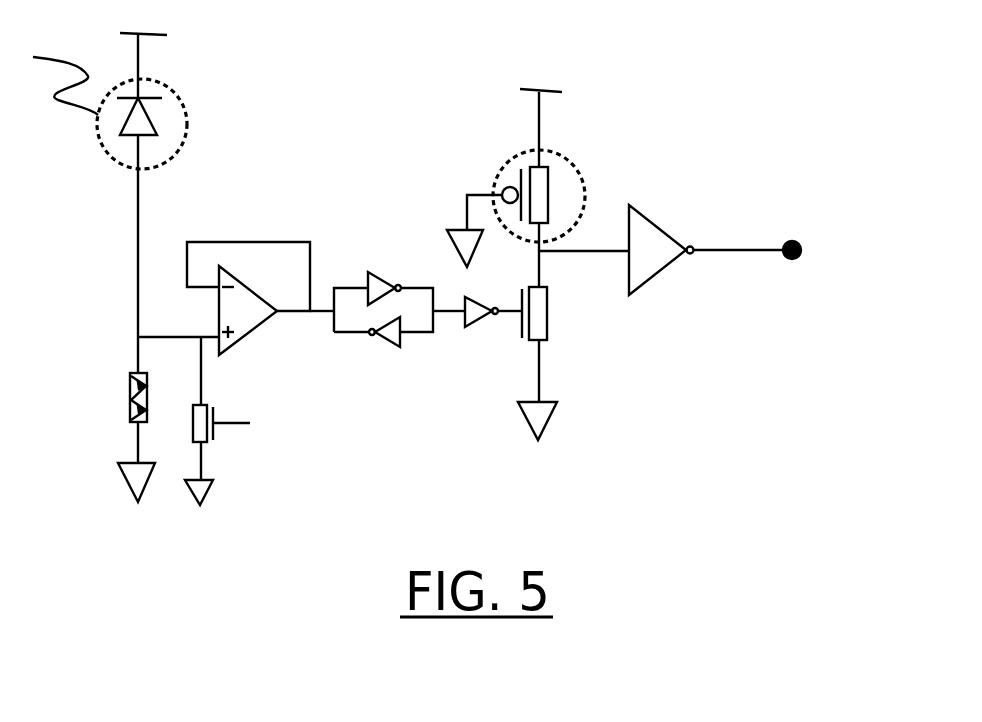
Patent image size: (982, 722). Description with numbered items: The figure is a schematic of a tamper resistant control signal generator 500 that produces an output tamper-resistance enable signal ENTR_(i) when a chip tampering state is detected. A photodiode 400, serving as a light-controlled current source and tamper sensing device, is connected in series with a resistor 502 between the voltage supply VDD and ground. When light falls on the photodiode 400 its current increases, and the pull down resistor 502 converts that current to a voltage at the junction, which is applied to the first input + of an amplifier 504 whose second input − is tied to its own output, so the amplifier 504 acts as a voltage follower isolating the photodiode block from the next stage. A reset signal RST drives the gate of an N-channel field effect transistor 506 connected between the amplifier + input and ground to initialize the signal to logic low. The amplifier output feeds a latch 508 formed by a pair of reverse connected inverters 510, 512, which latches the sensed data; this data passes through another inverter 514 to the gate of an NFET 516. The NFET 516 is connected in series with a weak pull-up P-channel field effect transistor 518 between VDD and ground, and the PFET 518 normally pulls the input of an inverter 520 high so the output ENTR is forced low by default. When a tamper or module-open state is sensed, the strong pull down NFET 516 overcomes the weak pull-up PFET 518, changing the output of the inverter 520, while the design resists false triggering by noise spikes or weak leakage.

The tamper resistant control signal generator 500 is at (328, 48).
The photodiode 400 is at (110, 192).
The resistor 502 is at (119, 437).
The amplifier 504 is at (236, 320).
The N-channel field effect transistor 506 is at (205, 430).
The latch 508 is at (382, 270).
The inverter 510 is at (386, 278).
The inverter 512 is at (383, 342).
The inverter 514 is at (477, 327).
The NFET 516 is at (545, 317).
The P-channel field effect transistor 518 is at (510, 157).
The inverter 520 is at (655, 268).